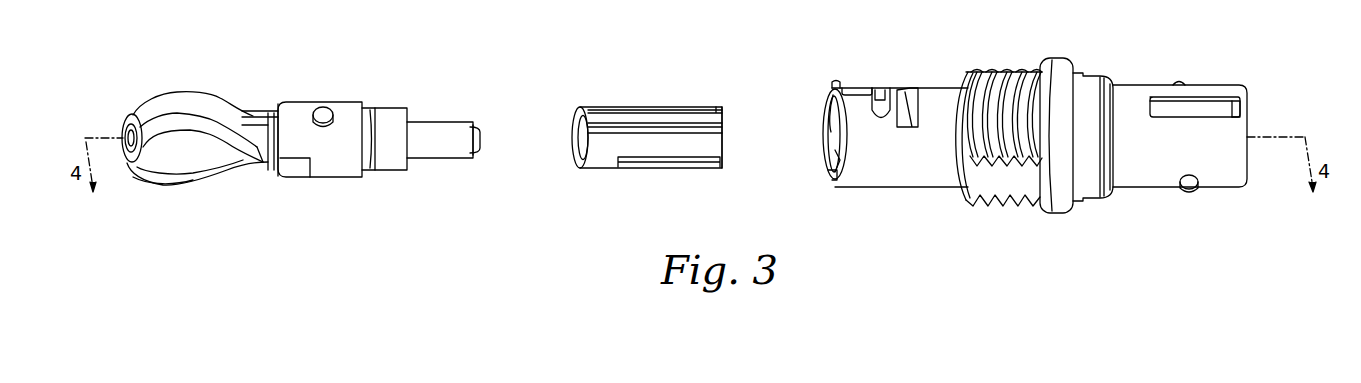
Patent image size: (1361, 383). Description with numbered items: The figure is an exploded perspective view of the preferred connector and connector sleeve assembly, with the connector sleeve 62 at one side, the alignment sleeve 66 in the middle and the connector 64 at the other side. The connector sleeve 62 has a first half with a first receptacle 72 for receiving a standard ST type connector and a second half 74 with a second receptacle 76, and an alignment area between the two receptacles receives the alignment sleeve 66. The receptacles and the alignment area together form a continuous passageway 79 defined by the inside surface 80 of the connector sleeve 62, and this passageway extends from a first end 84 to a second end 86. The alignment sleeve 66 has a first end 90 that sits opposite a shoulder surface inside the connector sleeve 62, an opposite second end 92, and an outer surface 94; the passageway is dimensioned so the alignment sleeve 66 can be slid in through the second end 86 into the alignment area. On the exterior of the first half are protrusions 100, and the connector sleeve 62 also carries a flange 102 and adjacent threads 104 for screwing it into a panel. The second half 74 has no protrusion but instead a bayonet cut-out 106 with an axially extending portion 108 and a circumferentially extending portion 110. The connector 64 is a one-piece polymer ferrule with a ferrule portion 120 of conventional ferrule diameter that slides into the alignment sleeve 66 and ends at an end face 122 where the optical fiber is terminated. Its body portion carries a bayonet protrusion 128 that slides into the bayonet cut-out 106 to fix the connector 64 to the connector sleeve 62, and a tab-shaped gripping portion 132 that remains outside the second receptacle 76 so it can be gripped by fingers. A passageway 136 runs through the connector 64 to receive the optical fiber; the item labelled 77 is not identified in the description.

The connector sleeve 62 is at (1035, 132).
The connector 64 is at (234, 190).
The alignment sleeve 66 is at (598, 160).
The first receptacle 72 is at (1245, 110).
The second half 74 is at (943, 96).
The second receptacle 76 is at (828, 152).
The O-ring 77 is at (1130, 85).
The continuous passageway 79 is at (830, 118).
The inside surface 80 is at (828, 135).
The first end 84 is at (1208, 108).
The second end 86 is at (836, 182).
The first end 90 is at (722, 150).
The second end 92 is at (572, 150).
The outer surface 94 is at (678, 162).
The protrusions 100 is at (1190, 193).
The flange 102 is at (1062, 60).
The threads 104 is at (1020, 68).
The bayonet cut-out 106 is at (836, 80).
The axially extending portion 108 is at (845, 88).
The circumferentially extending portion 110 is at (880, 92).
The ferrule portion 120 is at (340, 164).
The end face 122 is at (482, 140).
The bayonet protrusion 128 is at (325, 107).
The gripping portion 132 is at (173, 176).
The passageway 136 is at (125, 138).